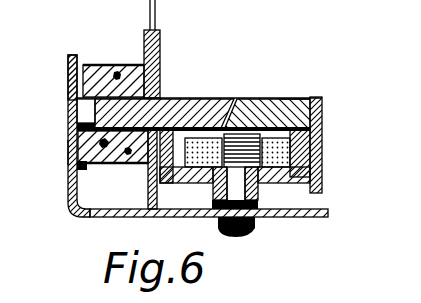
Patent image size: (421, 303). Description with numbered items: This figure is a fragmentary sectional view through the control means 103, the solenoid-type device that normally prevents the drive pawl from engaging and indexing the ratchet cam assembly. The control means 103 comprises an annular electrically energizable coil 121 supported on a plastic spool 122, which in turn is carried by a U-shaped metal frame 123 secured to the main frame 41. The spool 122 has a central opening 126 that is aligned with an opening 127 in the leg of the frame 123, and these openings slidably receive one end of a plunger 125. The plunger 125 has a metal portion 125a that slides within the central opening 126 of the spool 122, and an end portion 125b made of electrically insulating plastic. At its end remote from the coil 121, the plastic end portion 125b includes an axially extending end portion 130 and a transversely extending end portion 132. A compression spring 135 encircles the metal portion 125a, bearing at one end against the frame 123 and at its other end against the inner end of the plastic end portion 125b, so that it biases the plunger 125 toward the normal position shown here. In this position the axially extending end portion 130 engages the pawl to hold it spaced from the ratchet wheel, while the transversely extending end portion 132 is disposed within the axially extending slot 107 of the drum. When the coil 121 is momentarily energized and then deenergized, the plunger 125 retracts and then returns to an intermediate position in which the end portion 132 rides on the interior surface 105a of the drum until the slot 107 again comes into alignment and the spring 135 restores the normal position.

The control means 103 is at (57, 188).
The frame 41 is at (305, 218).
The U-shaped metal frame 123 is at (68, 65).
The coil 121 is at (107, 66).
The spool 122 is at (82, 60).
The compression spring 135 is at (190, 97).
The opening 127 is at (70, 105).
The central opening 126 is at (127, 133).
The metal portion 125a is at (77, 150).
The plunger 125 is at (283, 97).
The end portion 125b is at (303, 97).
The axially extending end portion 130 is at (323, 96).
The interior surface 105a is at (293, 183).
The transversely extending end portion 132 is at (305, 150).
The slot 107 is at (300, 153).